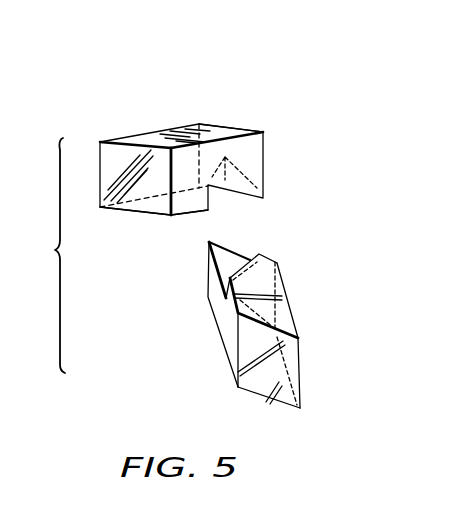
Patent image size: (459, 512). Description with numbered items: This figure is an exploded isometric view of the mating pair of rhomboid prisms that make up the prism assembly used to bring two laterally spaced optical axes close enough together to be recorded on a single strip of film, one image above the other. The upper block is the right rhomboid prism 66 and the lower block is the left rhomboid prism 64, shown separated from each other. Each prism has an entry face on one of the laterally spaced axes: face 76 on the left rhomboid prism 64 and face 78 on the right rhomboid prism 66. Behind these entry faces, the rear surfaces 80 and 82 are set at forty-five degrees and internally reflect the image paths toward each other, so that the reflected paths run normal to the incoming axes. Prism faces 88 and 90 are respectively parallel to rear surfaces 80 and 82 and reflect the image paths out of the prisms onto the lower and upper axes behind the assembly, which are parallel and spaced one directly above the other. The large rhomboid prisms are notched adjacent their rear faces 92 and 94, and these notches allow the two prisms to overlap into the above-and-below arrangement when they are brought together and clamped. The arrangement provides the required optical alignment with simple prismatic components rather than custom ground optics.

The right rhomboid prism 66 is at (199, 168).
The rear surface 82 is at (124, 134).
The rear face 94 is at (249, 131).
The face 78 is at (123, 193).
The prism face 90 is at (183, 203).
The left rhomboid prism 64 is at (248, 324).
The rear face 92 is at (270, 253).
The rear surface 80 is at (297, 323).
The prism face 88 is at (225, 343).
The face 76 is at (260, 380).